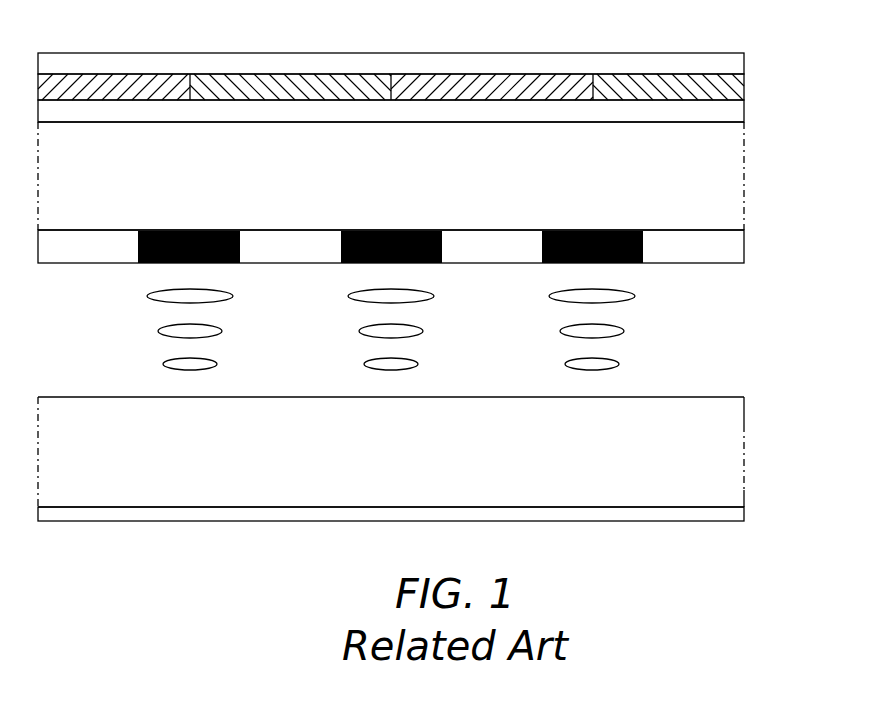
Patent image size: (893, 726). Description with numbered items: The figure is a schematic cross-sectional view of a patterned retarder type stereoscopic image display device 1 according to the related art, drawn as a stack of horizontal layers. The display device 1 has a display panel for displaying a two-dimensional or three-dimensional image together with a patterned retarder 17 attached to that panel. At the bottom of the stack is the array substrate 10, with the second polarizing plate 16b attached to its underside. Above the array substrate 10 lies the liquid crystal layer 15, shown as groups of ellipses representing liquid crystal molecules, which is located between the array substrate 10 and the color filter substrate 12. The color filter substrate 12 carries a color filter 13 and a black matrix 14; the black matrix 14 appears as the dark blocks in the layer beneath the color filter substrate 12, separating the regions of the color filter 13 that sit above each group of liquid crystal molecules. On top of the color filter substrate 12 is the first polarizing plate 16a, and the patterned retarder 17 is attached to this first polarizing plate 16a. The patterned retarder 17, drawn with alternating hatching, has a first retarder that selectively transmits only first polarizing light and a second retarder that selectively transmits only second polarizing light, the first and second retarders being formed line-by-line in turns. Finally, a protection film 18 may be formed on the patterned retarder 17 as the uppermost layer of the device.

The display device 1 is at (397, 26).
The array substrate 10 is at (730, 460).
The color filter substrate 12 is at (730, 180).
The color filter 13 is at (730, 246).
The black matrix 14 is at (636, 263).
The liquid crystal layer 15 is at (620, 331).
The first polarizing plate 16a is at (730, 116).
The second polarizing plate 16b is at (730, 516).
The patterned retarder 17 is at (730, 88).
The protection film 18 is at (730, 63).